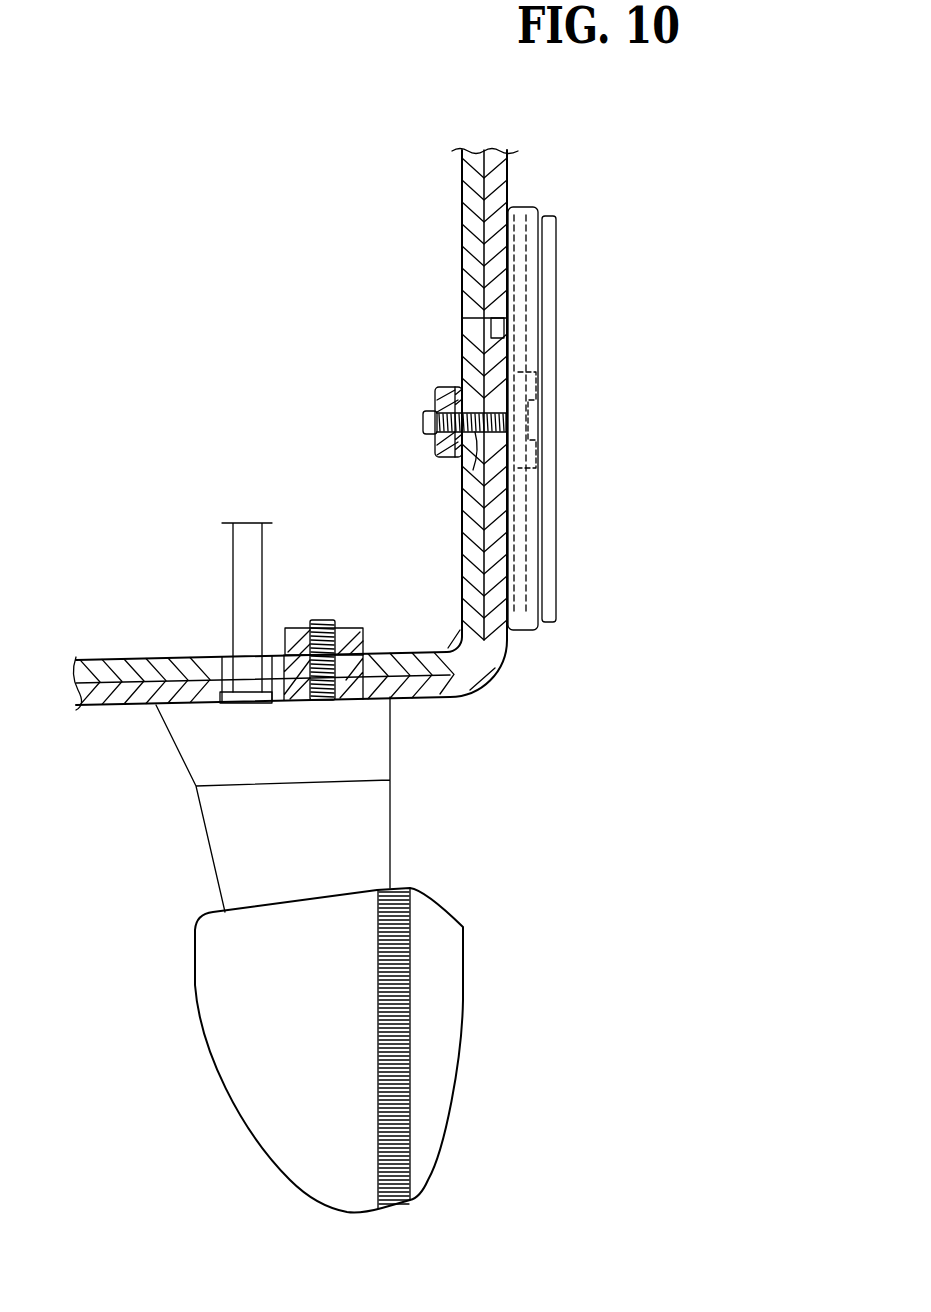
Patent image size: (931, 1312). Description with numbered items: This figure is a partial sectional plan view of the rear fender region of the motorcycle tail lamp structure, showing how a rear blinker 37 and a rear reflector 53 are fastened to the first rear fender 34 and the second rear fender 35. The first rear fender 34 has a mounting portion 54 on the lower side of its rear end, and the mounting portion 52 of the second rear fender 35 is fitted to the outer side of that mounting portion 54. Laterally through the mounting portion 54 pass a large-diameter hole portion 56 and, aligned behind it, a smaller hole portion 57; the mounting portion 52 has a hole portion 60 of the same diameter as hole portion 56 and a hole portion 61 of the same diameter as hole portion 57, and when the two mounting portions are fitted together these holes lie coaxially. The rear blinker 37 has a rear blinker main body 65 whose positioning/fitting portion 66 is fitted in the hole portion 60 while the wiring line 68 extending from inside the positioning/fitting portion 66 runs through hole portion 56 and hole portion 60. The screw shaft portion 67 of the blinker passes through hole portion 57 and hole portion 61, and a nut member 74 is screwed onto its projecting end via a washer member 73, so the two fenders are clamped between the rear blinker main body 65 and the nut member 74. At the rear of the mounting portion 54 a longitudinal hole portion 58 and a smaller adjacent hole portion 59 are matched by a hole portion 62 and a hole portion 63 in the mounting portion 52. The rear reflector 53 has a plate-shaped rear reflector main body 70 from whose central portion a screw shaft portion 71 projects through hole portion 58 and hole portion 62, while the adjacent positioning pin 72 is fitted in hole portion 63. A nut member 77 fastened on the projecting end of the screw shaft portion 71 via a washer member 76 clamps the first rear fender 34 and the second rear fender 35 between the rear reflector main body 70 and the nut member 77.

The first rear fender 34 is at (446, 178).
The second rear fender 35 is at (520, 178).
The rear blinker 37 is at (174, 930).
The mounting portion 52 is at (100, 716).
The rear reflector 53 is at (578, 633).
The mounting portion 54 is at (110, 654).
The hole portion 56 is at (278, 652).
The hole portion 57 is at (300, 700).
The hole portion 58 is at (473, 455).
The hole portion 59 is at (462, 320).
The hole portion 60 is at (265, 705).
The hole portion 61 is at (331, 700).
The hole portion 62 is at (512, 425).
The hole portion 63 is at (507, 330).
The rear blinker main body 65 is at (388, 718).
The positioning/fitting portion 66 is at (222, 655).
The screw shaft portion 67 is at (322, 620).
The wiring line 68 is at (231, 533).
The rear reflector main body 70 is at (557, 245).
The screw shaft portion 71 is at (425, 425).
The positioning pin 72 is at (490, 328).
The washer member 73 is at (380, 651).
The nut member 74 is at (360, 627).
The washer member 76 is at (456, 388).
The nut member 77 is at (440, 398).